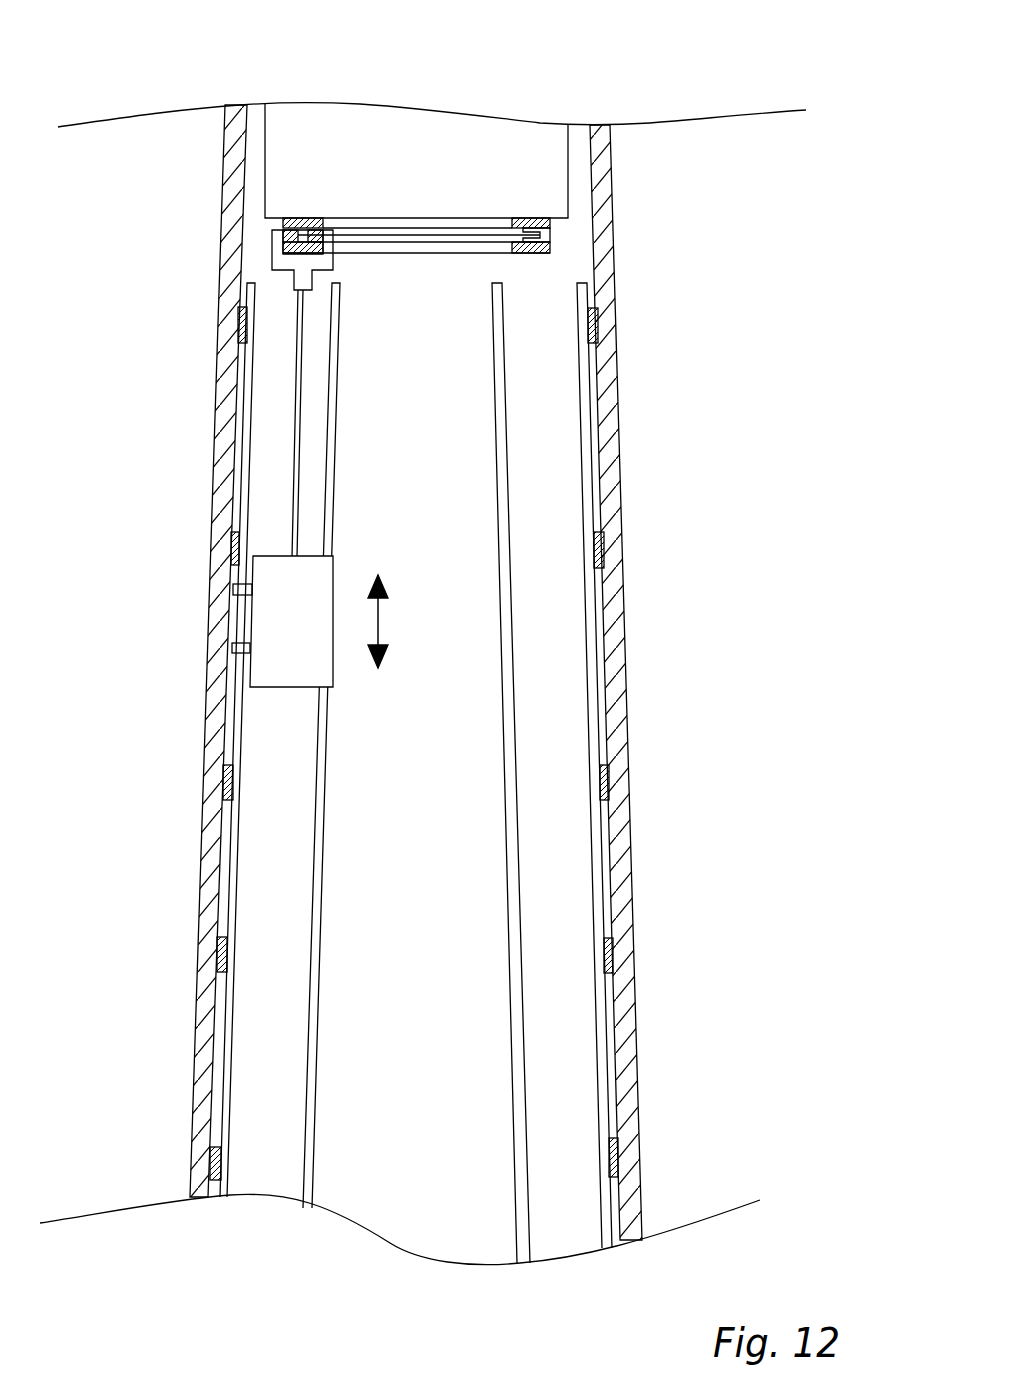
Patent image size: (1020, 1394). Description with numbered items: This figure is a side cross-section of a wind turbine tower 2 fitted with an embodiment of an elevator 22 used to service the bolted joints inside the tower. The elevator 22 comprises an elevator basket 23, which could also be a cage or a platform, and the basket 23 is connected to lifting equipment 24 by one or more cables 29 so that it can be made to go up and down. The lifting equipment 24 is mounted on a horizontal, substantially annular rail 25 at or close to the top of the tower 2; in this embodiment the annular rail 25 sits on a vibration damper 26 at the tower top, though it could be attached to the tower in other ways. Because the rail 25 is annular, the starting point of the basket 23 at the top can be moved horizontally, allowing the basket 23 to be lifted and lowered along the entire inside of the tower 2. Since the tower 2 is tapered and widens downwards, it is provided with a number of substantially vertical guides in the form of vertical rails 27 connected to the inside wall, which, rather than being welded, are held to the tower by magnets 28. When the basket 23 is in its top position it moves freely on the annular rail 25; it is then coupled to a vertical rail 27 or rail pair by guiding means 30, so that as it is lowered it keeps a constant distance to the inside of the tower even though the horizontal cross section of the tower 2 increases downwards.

The wind turbine tower 2 is at (662, 331).
The elevator 22 is at (272, 575).
The elevator basket 23 is at (287, 639).
The lifting equipment 24 is at (282, 265).
The annular rail 25 is at (545, 222).
The vibration damper 26 is at (368, 166).
The vertical rail 27 is at (228, 893).
The magnet 28 is at (227, 780).
The cable 29 is at (295, 385).
The guiding means 30 is at (236, 649).